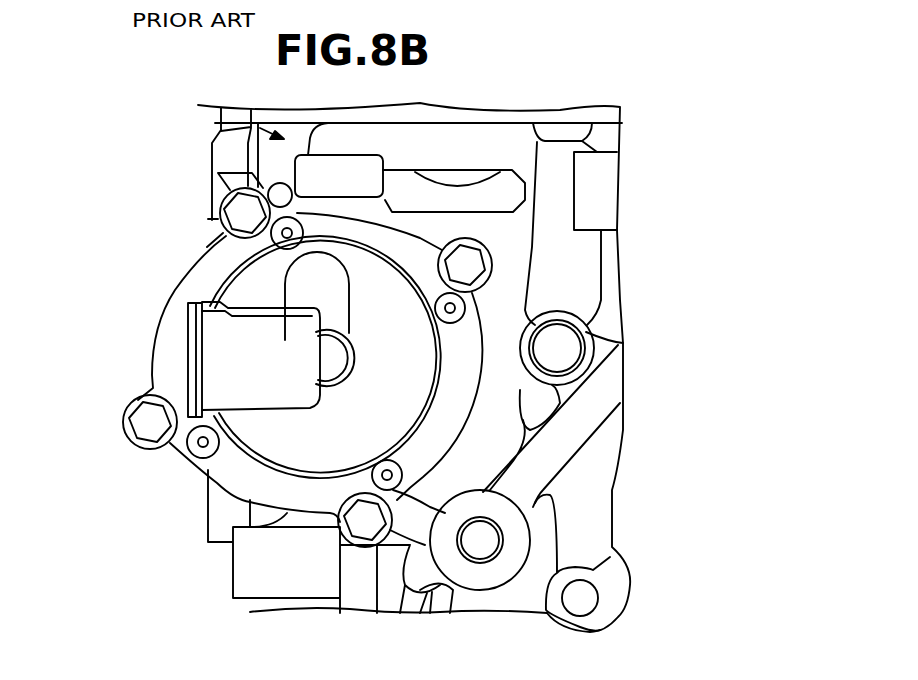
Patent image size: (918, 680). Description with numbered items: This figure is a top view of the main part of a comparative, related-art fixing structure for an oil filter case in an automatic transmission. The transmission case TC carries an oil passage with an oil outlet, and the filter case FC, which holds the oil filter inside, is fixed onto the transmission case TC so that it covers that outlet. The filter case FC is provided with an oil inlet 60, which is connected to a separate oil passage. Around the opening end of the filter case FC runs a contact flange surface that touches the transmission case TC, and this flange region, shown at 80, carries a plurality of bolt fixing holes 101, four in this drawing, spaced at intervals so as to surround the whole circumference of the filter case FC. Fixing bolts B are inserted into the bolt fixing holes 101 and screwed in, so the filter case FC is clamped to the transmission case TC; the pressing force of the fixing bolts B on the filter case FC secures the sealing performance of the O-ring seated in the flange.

The transmission case TC is at (215, 123).
The bolt fixing holes 101 is at (218, 200).
The fixing bolts B is at (240, 212).
The flange 80 is at (200, 280).
The oil inlet 60 is at (188, 340).
The filter case FC is at (292, 438).